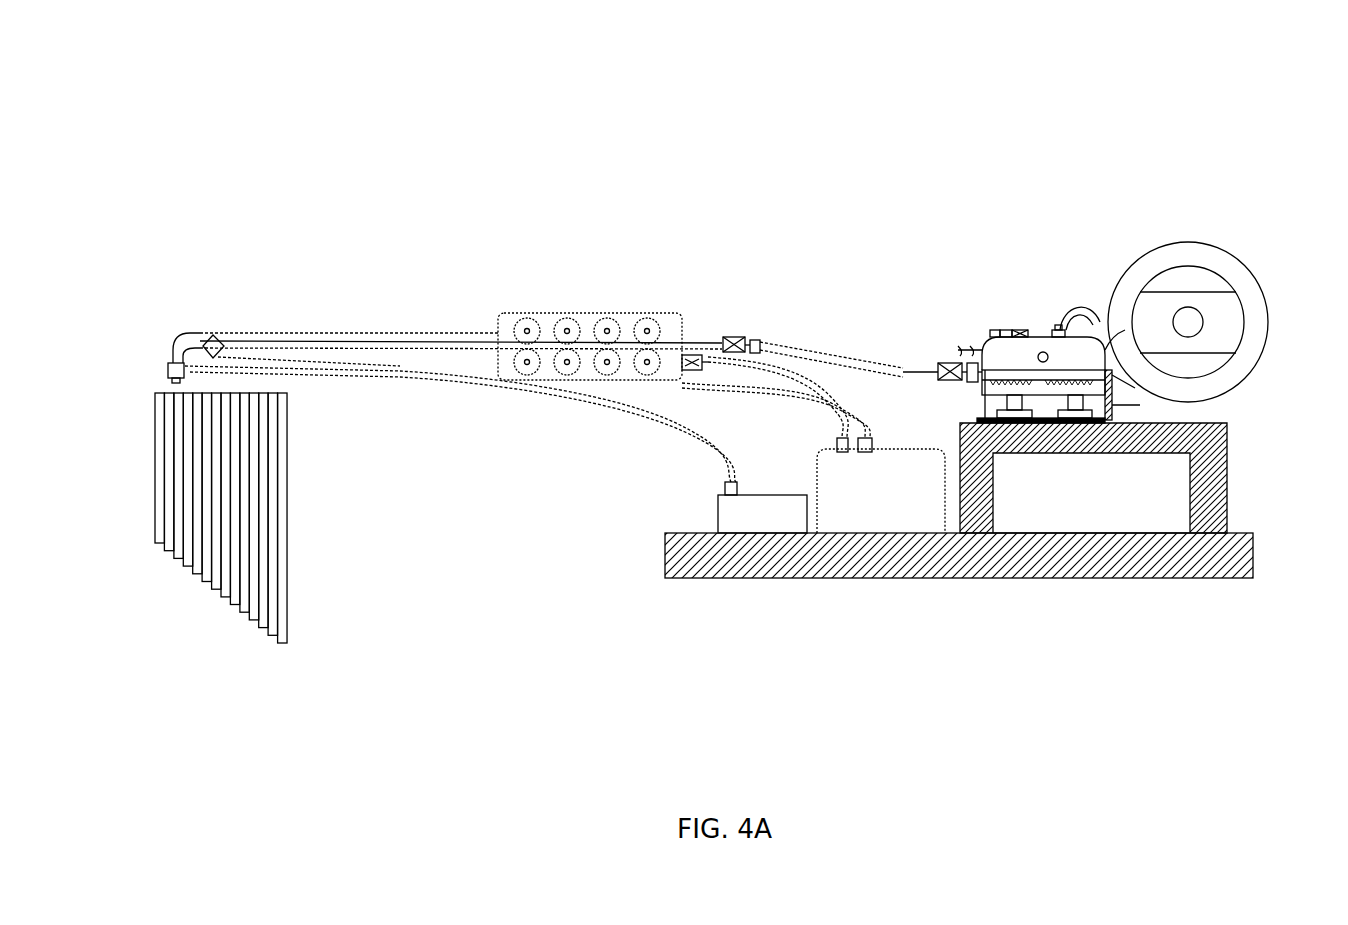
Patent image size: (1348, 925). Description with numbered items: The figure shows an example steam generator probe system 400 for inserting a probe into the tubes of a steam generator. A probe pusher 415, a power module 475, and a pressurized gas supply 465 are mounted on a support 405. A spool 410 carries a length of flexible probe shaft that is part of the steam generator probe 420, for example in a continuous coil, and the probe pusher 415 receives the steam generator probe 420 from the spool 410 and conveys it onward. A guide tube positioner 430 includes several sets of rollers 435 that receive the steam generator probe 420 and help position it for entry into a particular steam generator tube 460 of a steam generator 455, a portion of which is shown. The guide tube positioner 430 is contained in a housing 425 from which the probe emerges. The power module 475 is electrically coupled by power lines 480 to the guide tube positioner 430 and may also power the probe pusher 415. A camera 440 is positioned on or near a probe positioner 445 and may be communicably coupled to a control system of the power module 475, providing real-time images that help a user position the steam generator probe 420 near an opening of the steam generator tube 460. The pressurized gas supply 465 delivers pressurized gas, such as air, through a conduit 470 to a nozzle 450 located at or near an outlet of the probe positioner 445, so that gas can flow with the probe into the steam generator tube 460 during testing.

The steam generator probe system 400 is at (217, 85).
The support 405 is at (1255, 558).
The spool 410 is at (1207, 244).
The probe pusher 415 is at (1020, 330).
The steam generator probe 420 is at (795, 336).
The roller housing 425 is at (673, 311).
The guide tube positioner 430 is at (561, 269).
The rollers 435 is at (525, 313).
The camera 440 is at (215, 326).
The probe positioner 445 is at (186, 334).
The nozzle 450 is at (162, 372).
The steam generator 455 is at (270, 518).
The steam generator tube 460 is at (288, 480).
The pressurized gas supply 465 is at (765, 492).
The conduit 470 is at (693, 438).
The power module 475 is at (887, 448).
The power lines 480 is at (807, 392).